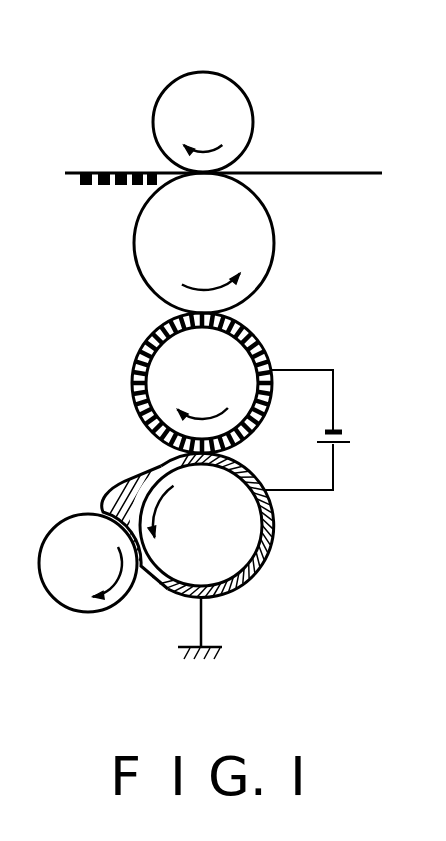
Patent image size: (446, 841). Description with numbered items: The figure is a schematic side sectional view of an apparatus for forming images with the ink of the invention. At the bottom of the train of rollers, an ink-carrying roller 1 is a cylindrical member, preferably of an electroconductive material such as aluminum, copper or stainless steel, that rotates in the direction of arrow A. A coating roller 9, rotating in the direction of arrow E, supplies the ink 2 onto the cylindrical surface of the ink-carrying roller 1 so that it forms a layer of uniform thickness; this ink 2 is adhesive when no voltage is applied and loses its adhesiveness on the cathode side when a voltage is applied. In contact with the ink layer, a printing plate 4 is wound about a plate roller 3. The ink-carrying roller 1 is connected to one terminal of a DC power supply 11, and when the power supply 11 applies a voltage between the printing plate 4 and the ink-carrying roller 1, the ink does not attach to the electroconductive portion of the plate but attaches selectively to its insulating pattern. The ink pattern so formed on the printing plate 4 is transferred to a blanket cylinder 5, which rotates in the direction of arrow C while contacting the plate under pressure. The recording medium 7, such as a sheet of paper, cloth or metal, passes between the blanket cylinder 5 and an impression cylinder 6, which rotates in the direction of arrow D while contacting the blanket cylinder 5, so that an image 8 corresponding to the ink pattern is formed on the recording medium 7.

The ink-carrying roller 1 is at (243, 548).
The ink 2 is at (275, 518).
The plate roller 3 is at (238, 368).
The printing plate 4 is at (242, 322).
The blanket cylinder 5 is at (275, 242).
The impression cylinder 6 is at (243, 90).
The recording medium 7 is at (295, 173).
The image 8 is at (98, 185).
The coating roller 9 is at (98, 613).
The DC power supply 11 is at (345, 432).